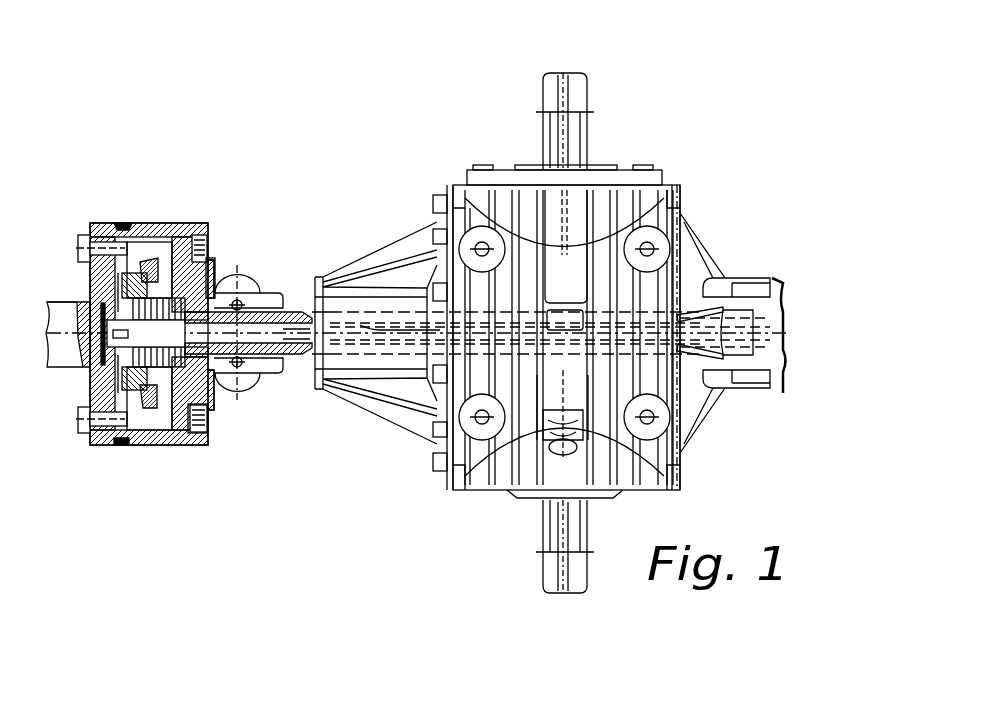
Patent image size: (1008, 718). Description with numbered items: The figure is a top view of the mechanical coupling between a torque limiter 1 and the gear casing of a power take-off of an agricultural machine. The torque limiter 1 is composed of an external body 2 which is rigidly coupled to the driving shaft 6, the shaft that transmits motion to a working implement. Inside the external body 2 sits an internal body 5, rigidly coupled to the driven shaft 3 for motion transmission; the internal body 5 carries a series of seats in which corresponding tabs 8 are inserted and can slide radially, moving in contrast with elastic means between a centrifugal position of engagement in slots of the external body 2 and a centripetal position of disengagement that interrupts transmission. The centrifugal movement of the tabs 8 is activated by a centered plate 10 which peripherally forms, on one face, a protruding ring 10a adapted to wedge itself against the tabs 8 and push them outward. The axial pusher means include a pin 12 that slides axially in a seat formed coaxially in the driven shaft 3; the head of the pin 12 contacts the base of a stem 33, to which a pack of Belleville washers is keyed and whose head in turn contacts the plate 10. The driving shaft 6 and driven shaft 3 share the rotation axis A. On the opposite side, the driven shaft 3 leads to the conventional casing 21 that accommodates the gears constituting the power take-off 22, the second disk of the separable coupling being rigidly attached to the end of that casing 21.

The torque limiter 1 is at (134, 197).
The external body 2 is at (148, 227).
The driven shaft 3 is at (268, 323).
The internal body 5 is at (206, 290).
The driving shaft 6 is at (63, 310).
The tabs 8 is at (152, 258).
The centered plate 10 is at (135, 347).
The protruding ring 10a is at (135, 385).
The pin 12 is at (254, 335).
The casing 21 is at (464, 382).
The power take-off 22 is at (448, 178).
The stem 33 is at (190, 432).
The rotation axis A is at (35, 333).